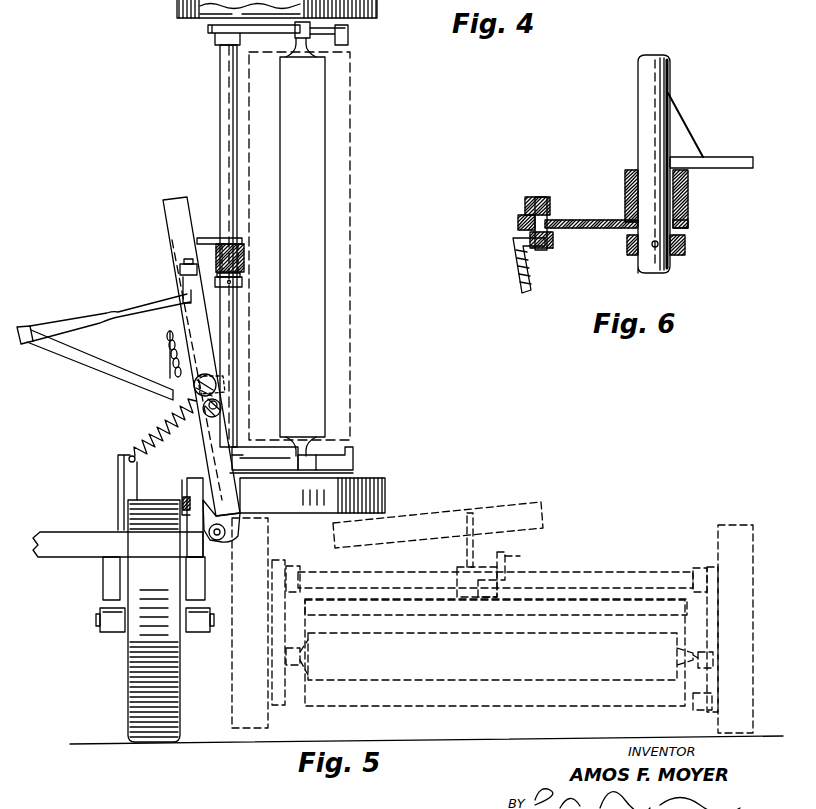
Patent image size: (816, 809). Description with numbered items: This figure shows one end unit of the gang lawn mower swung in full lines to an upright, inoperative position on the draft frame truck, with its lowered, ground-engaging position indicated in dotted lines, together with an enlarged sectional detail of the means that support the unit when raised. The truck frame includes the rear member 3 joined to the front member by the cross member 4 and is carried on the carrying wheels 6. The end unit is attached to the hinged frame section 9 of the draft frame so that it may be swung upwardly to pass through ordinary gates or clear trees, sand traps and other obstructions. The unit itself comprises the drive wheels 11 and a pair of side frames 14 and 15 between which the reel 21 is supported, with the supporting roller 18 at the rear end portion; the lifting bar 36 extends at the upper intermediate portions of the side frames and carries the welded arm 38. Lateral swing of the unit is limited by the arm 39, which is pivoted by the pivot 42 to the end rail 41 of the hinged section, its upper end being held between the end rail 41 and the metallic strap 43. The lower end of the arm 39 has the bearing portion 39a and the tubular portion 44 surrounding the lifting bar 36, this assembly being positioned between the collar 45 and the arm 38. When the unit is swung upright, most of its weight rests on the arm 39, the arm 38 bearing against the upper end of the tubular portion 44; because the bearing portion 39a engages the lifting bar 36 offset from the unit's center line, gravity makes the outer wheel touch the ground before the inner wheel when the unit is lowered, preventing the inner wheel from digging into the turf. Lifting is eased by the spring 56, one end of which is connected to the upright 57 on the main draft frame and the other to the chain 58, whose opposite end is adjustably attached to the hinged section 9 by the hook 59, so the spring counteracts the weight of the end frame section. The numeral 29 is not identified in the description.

In FIG. 4, the hand wheel 29 is at (300, 10).
In FIG. 4, the drive wheels 11 is at (354, 13).
In FIG. 5, the drive wheels 11 is at (232, 663).
In FIG. 4, the side frame 15 is at (256, 33).
In FIG. 5, the side frame 15 is at (700, 619).
In FIG. 4, the lifting bar 36 is at (223, 111).
In FIG. 5, the lifting bar 36 is at (600, 572).
In FIG. 6, the lifting bar 36 is at (640, 80).
In FIG. 4, the supporting roller 18 is at (307, 172).
In FIG. 5, the supporting roller 18 is at (512, 638).
In FIG. 4, the reel 21 is at (352, 198).
In FIG. 5, the reel 21 is at (470, 707).
In FIG. 4, the arm 38 is at (200, 238).
In FIG. 5, the arm 38 is at (507, 561).
In FIG. 6, the arm 38 is at (712, 160).
In FIG. 4, the tubular portion 44 is at (232, 253).
In FIG. 5, the tubular portion 44 is at (487, 600).
In FIG. 6, the tubular portion 44 is at (626, 190).
In FIG. 4, the arm 39 is at (219, 289).
In FIG. 5, the arm 39 is at (465, 549).
In FIG. 6, the arm 39 is at (598, 230).
In FIG. 6, the bearing portion 39a is at (690, 222).
In FIG. 4, the hinged frame section 9 is at (178, 246).
In FIG. 5, the hinged frame section 9 is at (430, 507).
In FIG. 4, the metallic strap 43 is at (178, 268).
In FIG. 6, the metallic strap 43 is at (520, 221).
In FIG. 6, the pivot 42 is at (552, 213).
In FIG. 4, the end rail 41 is at (179, 289).
In FIG. 6, the end rail 41 is at (515, 268).
In FIG. 6, the collar 45 is at (688, 246).
In FIG. 4, the hook 59 is at (168, 334).
In FIG. 4, the chain 58 is at (172, 370).
In FIG. 4, the spring 56 is at (160, 428).
In FIG. 4, the upright 57 is at (125, 466).
In FIG. 4, the side frame 14 is at (280, 460).
In FIG. 5, the side frame 14 is at (290, 615).
In FIG. 4, the cross member 4 is at (111, 530).
In FIG. 4, the rear member 3 is at (73, 548).
In FIG. 4, the carrying wheel 6 is at (138, 635).